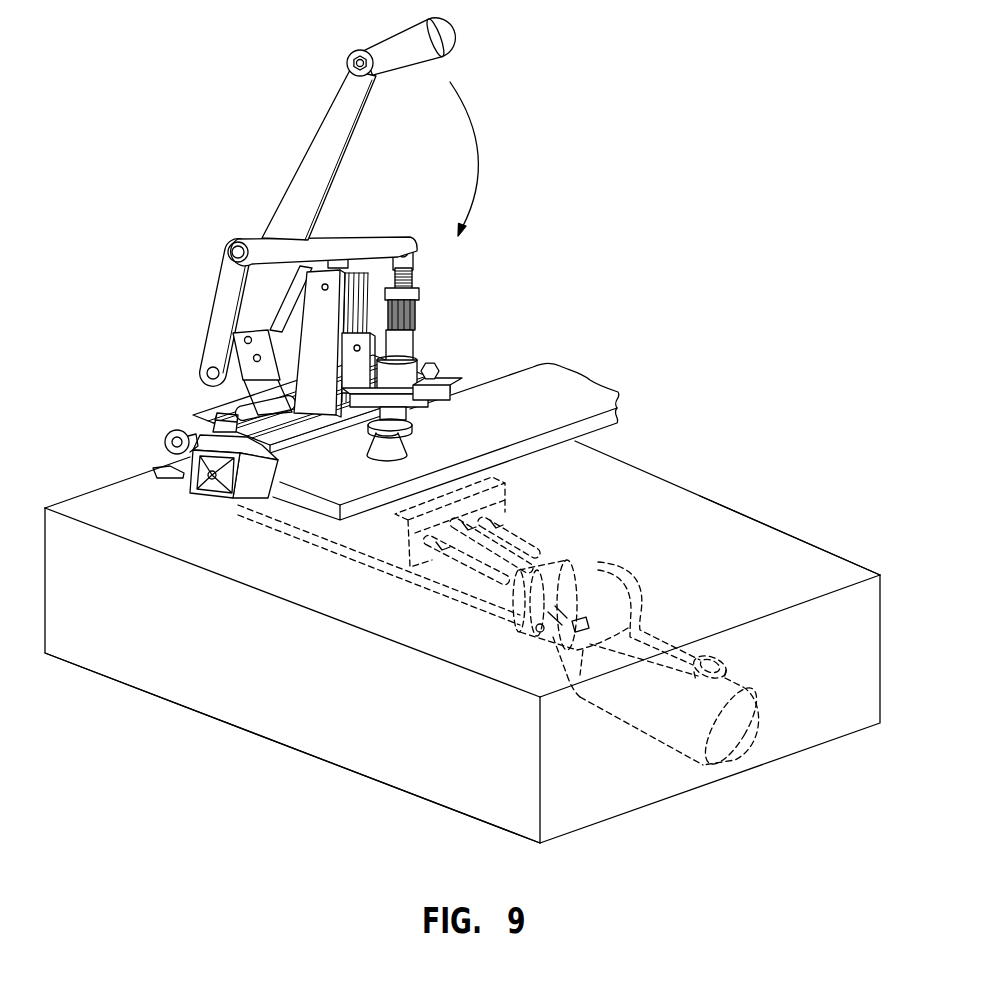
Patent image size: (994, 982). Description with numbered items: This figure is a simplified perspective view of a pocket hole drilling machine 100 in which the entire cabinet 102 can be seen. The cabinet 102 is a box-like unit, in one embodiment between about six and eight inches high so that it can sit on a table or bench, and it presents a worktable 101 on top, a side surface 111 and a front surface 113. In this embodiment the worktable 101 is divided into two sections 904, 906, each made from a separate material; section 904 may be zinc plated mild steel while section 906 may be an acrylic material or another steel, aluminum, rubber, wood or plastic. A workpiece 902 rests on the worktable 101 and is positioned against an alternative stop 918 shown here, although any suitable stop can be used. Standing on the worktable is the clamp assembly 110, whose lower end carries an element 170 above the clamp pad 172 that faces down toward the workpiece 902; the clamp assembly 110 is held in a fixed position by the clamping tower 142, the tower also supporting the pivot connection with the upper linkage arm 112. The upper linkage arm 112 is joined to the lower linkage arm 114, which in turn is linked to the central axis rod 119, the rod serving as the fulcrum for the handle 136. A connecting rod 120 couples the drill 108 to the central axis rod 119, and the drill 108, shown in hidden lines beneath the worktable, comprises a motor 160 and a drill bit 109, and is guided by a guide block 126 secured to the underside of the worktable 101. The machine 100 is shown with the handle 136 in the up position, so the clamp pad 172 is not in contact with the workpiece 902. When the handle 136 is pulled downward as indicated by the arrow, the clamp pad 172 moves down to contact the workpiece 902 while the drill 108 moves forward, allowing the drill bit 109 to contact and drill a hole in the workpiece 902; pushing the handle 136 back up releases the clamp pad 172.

The pocket hole boring machine 100 is at (726, 76).
The worktable 101 is at (755, 542).
The cabinet 102 is at (462, 624).
The drill 108 is at (630, 743).
The drill bit 109 is at (480, 545).
The clamp assembly 110 is at (466, 320).
The side surface 111 is at (270, 717).
The upper linkage arm 112 is at (282, 255).
The front surface 113 is at (798, 733).
The lower linkage arm 114 is at (219, 308).
The central axis rod 119 is at (205, 423).
The connecting rod 120 is at (485, 603).
The guide block 126 is at (380, 535).
The handle 136 is at (308, 151).
The clamping tower 142 is at (312, 280).
The motor 160 is at (648, 647).
The adapter disk 170 is at (403, 430).
The clamp pad 172 is at (407, 443).
The workpiece 902 is at (563, 398).
The worktable section 904 is at (128, 498).
The worktable section 906 is at (723, 518).
The alternative stop 918 is at (255, 488).